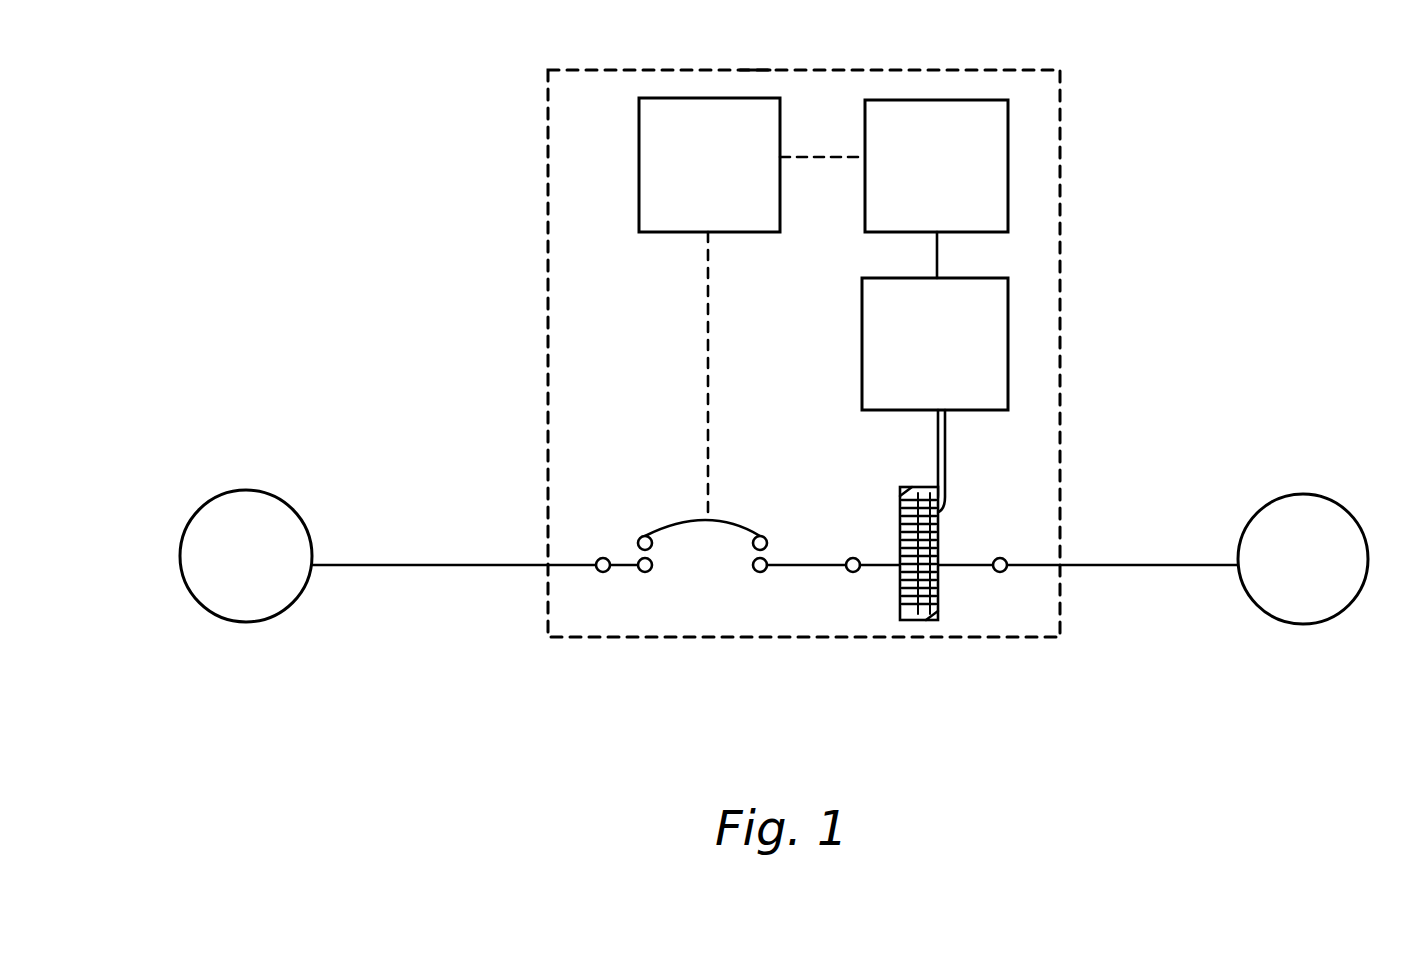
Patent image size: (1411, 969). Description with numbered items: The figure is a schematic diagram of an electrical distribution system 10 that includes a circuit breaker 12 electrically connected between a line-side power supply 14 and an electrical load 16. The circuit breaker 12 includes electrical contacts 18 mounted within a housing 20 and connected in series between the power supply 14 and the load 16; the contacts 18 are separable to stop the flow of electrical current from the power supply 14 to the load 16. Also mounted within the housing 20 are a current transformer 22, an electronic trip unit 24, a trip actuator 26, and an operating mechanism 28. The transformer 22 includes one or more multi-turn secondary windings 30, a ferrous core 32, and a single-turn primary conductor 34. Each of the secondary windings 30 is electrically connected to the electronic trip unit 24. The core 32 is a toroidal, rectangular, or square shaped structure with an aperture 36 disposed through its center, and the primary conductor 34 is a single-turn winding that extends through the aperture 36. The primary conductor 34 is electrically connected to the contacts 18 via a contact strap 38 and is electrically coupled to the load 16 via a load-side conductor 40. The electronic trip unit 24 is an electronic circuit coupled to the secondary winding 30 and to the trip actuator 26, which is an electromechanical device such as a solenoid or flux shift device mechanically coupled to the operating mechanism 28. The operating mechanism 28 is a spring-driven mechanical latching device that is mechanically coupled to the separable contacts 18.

The electrical distribution system 10 is at (1280, 163).
The circuit breaker 12 is at (950, 68).
The line-side power supply 14 is at (272, 493).
The electrical load 16 is at (1317, 492).
The electrical contacts 18 is at (759, 523).
The housing 20 is at (753, 70).
The current transformer 22 is at (981, 569).
The electronic trip unit 24 is at (1000, 345).
The trip actuator 26 is at (998, 165).
The operating mechanism 28 is at (670, 203).
The secondary windings 30 is at (933, 602).
The ferrous core 32 is at (928, 620).
The primary conductor 34 is at (885, 567).
The aperture 36 is at (907, 600).
The contact strap 38 is at (798, 566).
The load-side conductor 40 is at (1082, 563).